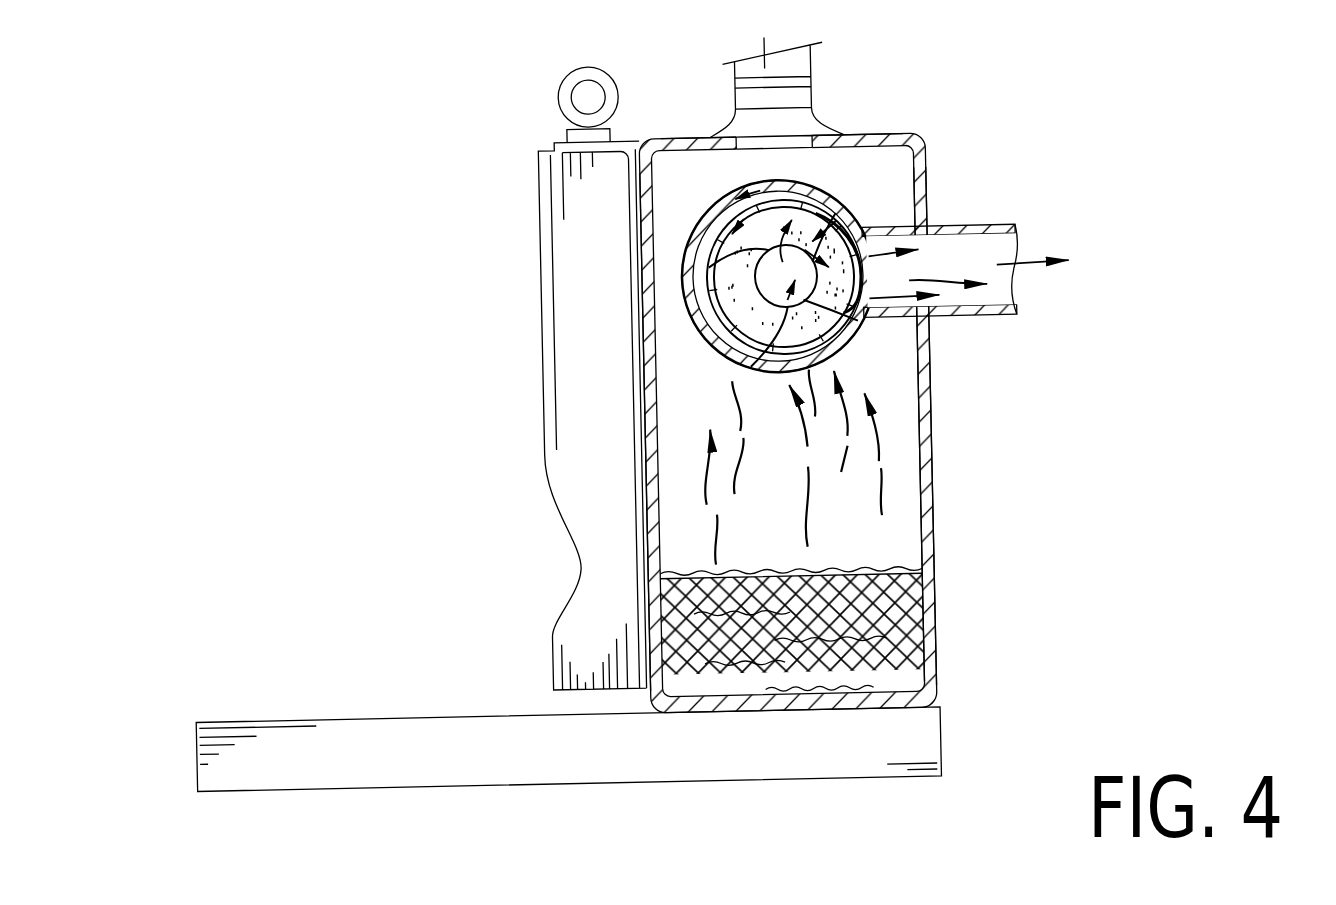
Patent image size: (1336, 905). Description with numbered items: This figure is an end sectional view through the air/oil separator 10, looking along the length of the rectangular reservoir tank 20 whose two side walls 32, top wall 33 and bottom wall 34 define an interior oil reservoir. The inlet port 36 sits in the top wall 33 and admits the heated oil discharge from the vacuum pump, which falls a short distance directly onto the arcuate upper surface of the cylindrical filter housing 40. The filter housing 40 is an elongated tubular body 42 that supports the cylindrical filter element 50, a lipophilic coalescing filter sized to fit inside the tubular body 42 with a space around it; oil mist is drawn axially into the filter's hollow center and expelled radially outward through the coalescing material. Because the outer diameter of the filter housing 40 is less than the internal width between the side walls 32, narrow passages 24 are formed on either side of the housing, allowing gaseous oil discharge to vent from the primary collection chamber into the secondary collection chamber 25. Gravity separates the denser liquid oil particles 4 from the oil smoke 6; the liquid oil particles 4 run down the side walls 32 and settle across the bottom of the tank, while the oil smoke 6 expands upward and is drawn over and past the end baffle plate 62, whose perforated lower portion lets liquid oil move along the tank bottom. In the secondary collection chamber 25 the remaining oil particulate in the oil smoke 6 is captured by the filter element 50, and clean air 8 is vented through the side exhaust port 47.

The liquid oil particles 4 is at (910, 668).
The oil smoke 6 is at (793, 466).
The clean air 8 is at (968, 266).
The air/oil separator 10 is at (405, 330).
The reservoir tank 20 is at (891, 130).
The passages 24 is at (760, 266).
The secondary collection chamber 25 is at (789, 545).
The side walls 32 is at (935, 423).
The top wall 33 is at (693, 133).
The bottom wall 34 is at (784, 706).
The inlet port 36 is at (821, 119).
The filter housing 40 is at (703, 323).
The tubular body 42 is at (692, 240).
The side exhaust port 47 is at (984, 230).
The filter element 50 is at (820, 224).
The end baffle plate 62 is at (903, 514).